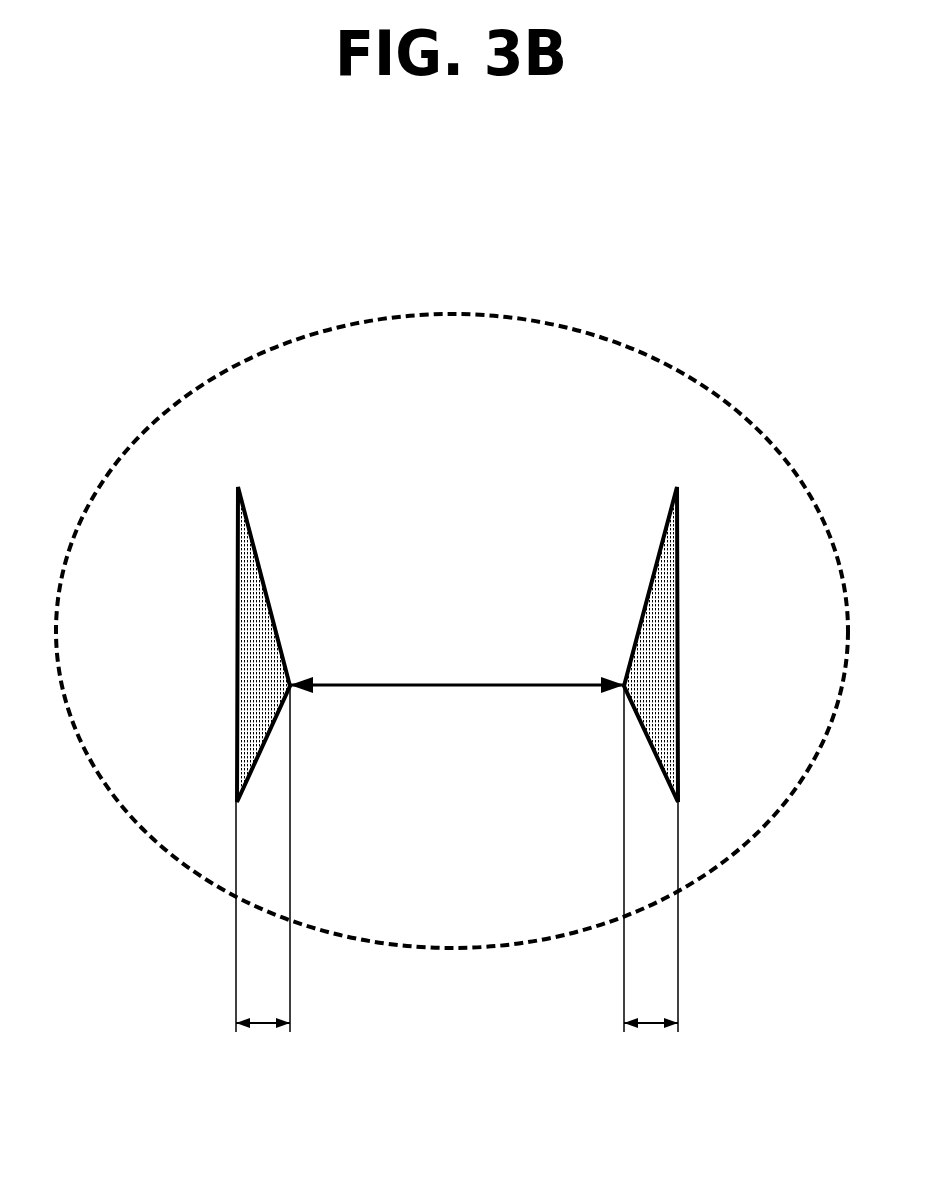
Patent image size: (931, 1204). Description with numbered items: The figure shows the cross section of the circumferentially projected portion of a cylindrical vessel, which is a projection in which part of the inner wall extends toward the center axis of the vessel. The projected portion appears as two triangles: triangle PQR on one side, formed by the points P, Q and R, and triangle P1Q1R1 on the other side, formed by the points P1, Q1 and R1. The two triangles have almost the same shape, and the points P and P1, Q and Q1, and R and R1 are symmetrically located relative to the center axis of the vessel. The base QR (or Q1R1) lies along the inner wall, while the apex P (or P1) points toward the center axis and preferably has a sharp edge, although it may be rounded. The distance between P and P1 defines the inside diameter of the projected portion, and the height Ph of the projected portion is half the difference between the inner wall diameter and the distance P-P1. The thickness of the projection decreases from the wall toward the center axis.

The upper vertex of triangle PQR R is at (260, 623).
The upper vertex of triangle P1Q1R1 R1 is at (660, 623).
The apex point of triangle PQR P is at (457, 854).
The apex point of triangle P1Q1R1 P1 is at (600, 854).
The lower vertex of triangle PQR Q is at (219, 905).
The lower vertex of triangle P1Q1R1 Q1 is at (701, 905).
The height of the projected portion Ph is at (457, 1042).